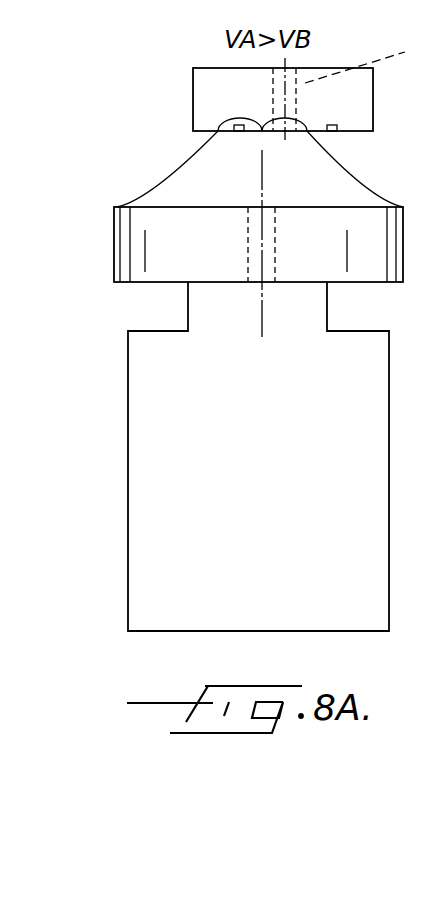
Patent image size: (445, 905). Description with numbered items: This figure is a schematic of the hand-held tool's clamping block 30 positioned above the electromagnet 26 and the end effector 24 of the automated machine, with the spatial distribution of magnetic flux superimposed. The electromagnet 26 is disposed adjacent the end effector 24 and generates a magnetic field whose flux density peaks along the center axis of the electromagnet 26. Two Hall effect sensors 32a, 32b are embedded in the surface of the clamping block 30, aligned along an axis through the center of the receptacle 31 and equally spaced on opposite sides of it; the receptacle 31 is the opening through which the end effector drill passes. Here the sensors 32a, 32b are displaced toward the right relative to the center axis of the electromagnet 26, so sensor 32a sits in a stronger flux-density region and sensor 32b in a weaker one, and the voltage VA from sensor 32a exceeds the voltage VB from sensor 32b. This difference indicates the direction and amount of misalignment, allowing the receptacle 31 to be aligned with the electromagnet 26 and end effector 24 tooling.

The end effector 24 is at (276, 478).
The electromagnet 26 is at (124, 250).
The clamping block 30 is at (203, 83).
The receptacle 31 is at (362, 64).
The Hall effect sensor 32a is at (238, 132).
The Hall effect sensor 32b is at (333, 132).